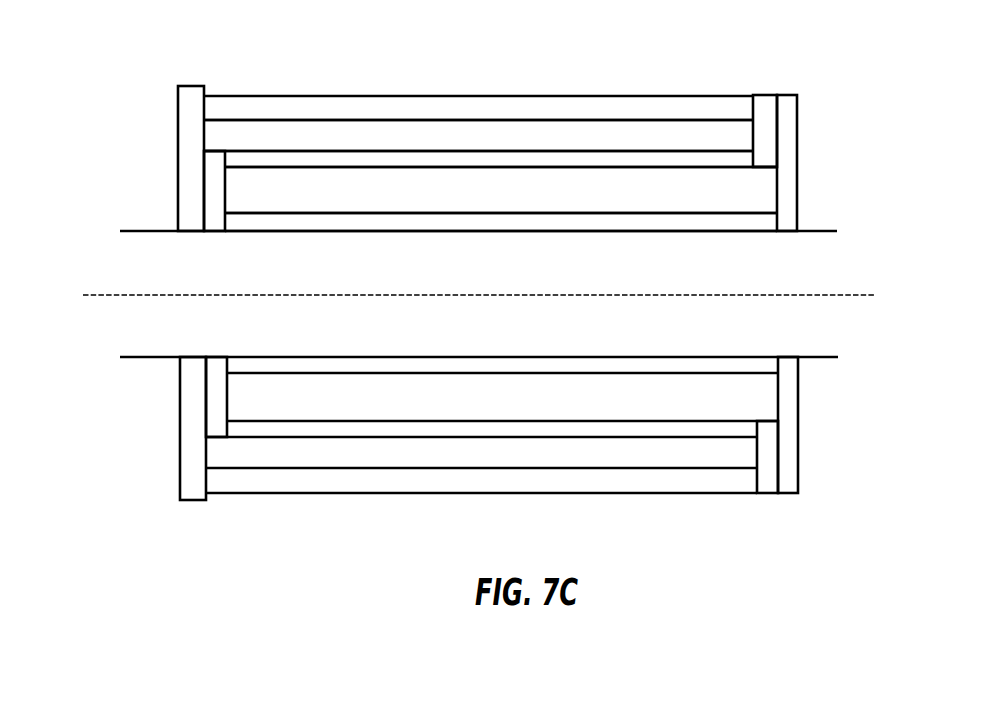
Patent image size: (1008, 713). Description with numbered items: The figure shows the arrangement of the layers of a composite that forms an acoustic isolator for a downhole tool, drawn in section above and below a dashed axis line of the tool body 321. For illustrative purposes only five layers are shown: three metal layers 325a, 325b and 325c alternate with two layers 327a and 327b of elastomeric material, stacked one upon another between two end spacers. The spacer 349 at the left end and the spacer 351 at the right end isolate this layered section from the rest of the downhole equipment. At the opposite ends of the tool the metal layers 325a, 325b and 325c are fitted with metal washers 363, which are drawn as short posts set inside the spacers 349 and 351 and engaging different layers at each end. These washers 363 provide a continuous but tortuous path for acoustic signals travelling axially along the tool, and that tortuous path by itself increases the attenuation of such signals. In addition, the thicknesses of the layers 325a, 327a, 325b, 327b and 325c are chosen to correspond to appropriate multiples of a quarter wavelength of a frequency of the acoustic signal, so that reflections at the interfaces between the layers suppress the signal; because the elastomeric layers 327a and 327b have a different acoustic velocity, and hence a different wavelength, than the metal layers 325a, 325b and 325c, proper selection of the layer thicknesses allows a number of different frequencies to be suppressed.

The substrate 321 is at (512, 306).
The spacer 349 is at (128, 133).
The spacer 351 is at (833, 154).
The metal washer 363 is at (489, 163).
The metal layer 325a is at (536, 244).
The metal layer 325b is at (490, 102).
The metal layer 325c is at (478, 62).
The elastomeric layer 327a is at (494, 124).
The elastomeric layer 327b is at (478, 75).